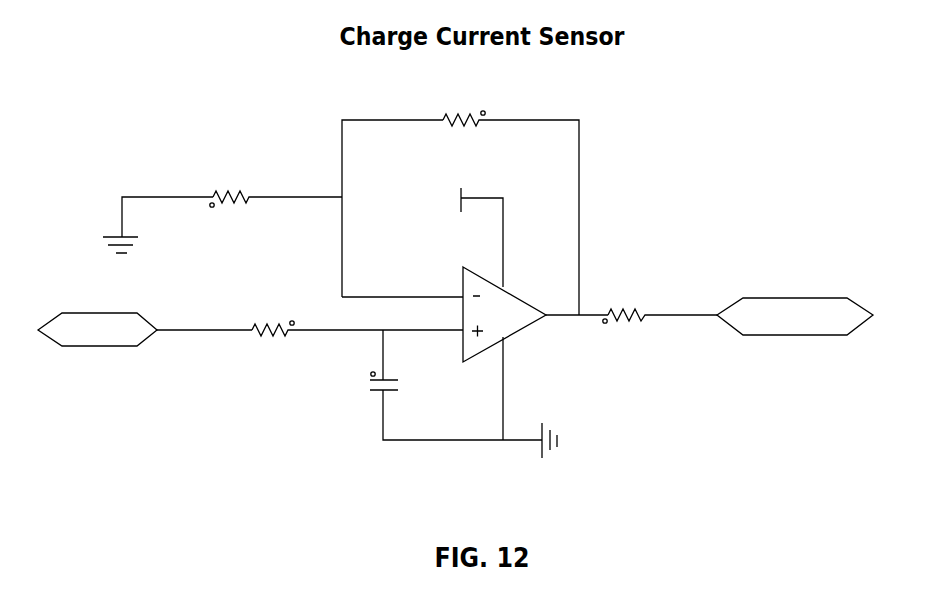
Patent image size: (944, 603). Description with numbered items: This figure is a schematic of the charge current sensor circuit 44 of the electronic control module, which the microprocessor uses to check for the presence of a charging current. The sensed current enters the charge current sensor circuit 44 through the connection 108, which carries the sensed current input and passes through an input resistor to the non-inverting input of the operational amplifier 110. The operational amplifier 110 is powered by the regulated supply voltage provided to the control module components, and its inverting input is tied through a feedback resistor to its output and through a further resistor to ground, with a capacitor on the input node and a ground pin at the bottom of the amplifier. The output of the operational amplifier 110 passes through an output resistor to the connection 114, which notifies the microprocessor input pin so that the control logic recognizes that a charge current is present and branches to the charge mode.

The charge current sensor circuit 44 is at (128, 105).
The connection 108 is at (100, 347).
The operational amplifier 110 is at (518, 332).
The connection 114 is at (782, 295).